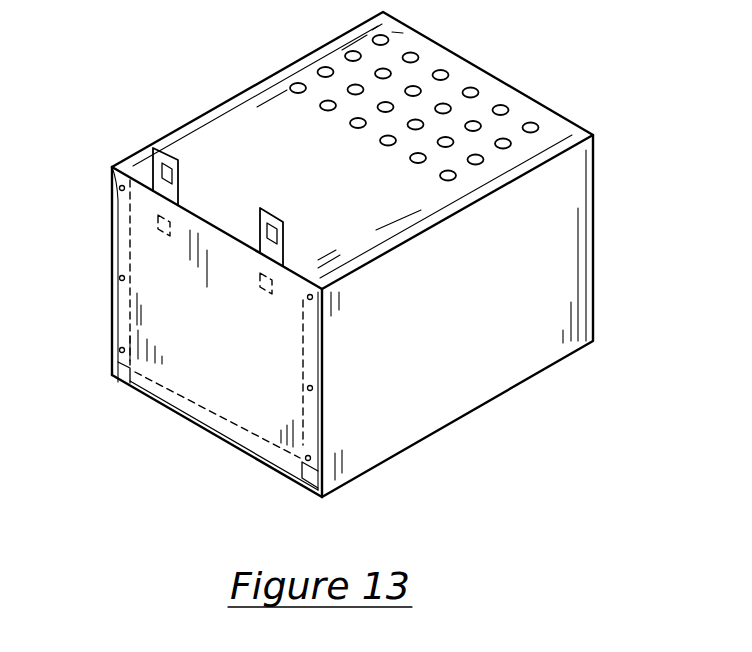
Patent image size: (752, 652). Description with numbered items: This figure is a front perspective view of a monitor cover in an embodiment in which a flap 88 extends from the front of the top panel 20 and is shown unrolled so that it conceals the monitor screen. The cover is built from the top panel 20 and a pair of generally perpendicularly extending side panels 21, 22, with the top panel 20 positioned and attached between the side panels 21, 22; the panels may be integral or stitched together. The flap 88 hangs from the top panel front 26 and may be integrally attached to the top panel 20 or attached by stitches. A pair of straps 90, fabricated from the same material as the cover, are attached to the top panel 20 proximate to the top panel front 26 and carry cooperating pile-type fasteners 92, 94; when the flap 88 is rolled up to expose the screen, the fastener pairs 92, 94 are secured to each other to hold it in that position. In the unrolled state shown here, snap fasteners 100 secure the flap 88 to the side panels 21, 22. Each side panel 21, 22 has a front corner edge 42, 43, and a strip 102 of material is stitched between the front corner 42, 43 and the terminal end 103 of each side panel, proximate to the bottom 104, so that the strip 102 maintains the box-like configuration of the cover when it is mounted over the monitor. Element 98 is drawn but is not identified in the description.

The top panel 20 is at (468, 70).
The side panel 22 is at (580, 305).
The flap 88 is at (266, 371).
The top panel front 26 is at (204, 219).
The side panel 21 is at (112, 247).
The front corner edge 42 is at (112, 193).
The front corner edge 43 is at (326, 341).
The strip 102 is at (172, 412).
The strap 90 is at (170, 152).
The pile-type fastener 92 is at (153, 148).
The pile-type fastener 94 is at (158, 214).
The snap fastener 100 is at (120, 279).
The terminal end 103 is at (120, 351).
The bottom 104 is at (120, 383).
The inner flange 98 is at (307, 423).